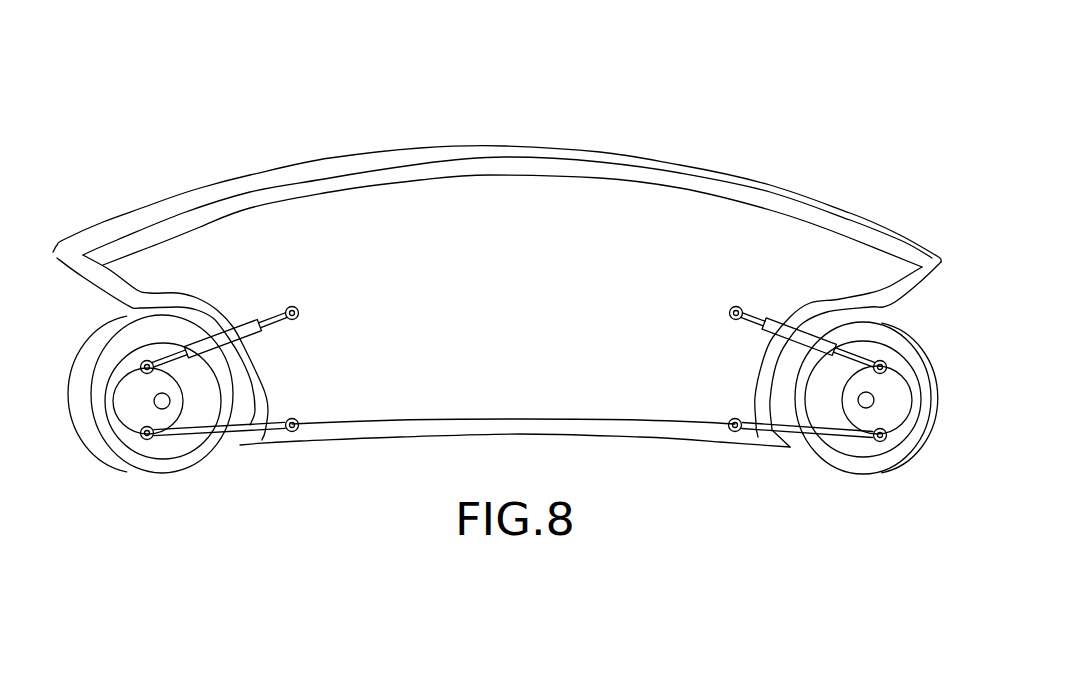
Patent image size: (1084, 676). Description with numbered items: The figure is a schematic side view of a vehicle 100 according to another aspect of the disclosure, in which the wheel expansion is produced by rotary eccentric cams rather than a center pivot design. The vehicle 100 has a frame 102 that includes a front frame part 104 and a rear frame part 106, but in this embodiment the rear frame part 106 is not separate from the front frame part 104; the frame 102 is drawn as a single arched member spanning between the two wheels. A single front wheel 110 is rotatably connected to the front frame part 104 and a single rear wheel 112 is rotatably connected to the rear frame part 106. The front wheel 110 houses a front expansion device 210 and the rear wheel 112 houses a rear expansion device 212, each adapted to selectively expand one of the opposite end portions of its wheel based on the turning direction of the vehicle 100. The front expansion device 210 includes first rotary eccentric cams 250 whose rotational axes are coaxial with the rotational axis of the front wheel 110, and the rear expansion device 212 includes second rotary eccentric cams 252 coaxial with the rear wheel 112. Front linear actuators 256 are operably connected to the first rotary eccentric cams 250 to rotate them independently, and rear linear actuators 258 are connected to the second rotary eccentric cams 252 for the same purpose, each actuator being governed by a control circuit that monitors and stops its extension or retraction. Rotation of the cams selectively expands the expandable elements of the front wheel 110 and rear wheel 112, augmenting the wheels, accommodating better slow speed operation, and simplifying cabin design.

The vehicle 100 is at (643, 130).
The frame 102 is at (398, 445).
The front frame part 104 is at (270, 440).
The rear frame part 106 is at (748, 437).
The front wheel 110 is at (152, 467).
The rear wheel 112 is at (935, 420).
The front expansion device 210 is at (85, 443).
The rear expansion device 212 is at (926, 348).
The first rotary eccentric cams 250 is at (127, 437).
The second rotary eccentric cams 252 is at (898, 430).
The front linear actuators 256 is at (252, 318).
The rear linear actuators 258 is at (772, 317).